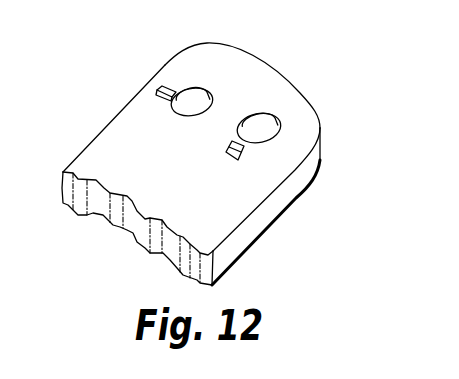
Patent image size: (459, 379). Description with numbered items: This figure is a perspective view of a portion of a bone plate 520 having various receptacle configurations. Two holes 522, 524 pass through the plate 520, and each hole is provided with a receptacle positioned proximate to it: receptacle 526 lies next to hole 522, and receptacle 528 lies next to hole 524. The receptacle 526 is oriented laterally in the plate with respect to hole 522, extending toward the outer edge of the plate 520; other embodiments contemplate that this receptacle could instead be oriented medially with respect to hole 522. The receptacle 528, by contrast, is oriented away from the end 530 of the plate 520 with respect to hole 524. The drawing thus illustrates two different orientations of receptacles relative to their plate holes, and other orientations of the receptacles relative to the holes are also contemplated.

The plate 520 is at (77, 134).
The hole 522 is at (198, 106).
The hole 524 is at (267, 131).
The receptacle 526 is at (167, 90).
The receptacle 528 is at (245, 148).
The end 530 is at (257, 62).